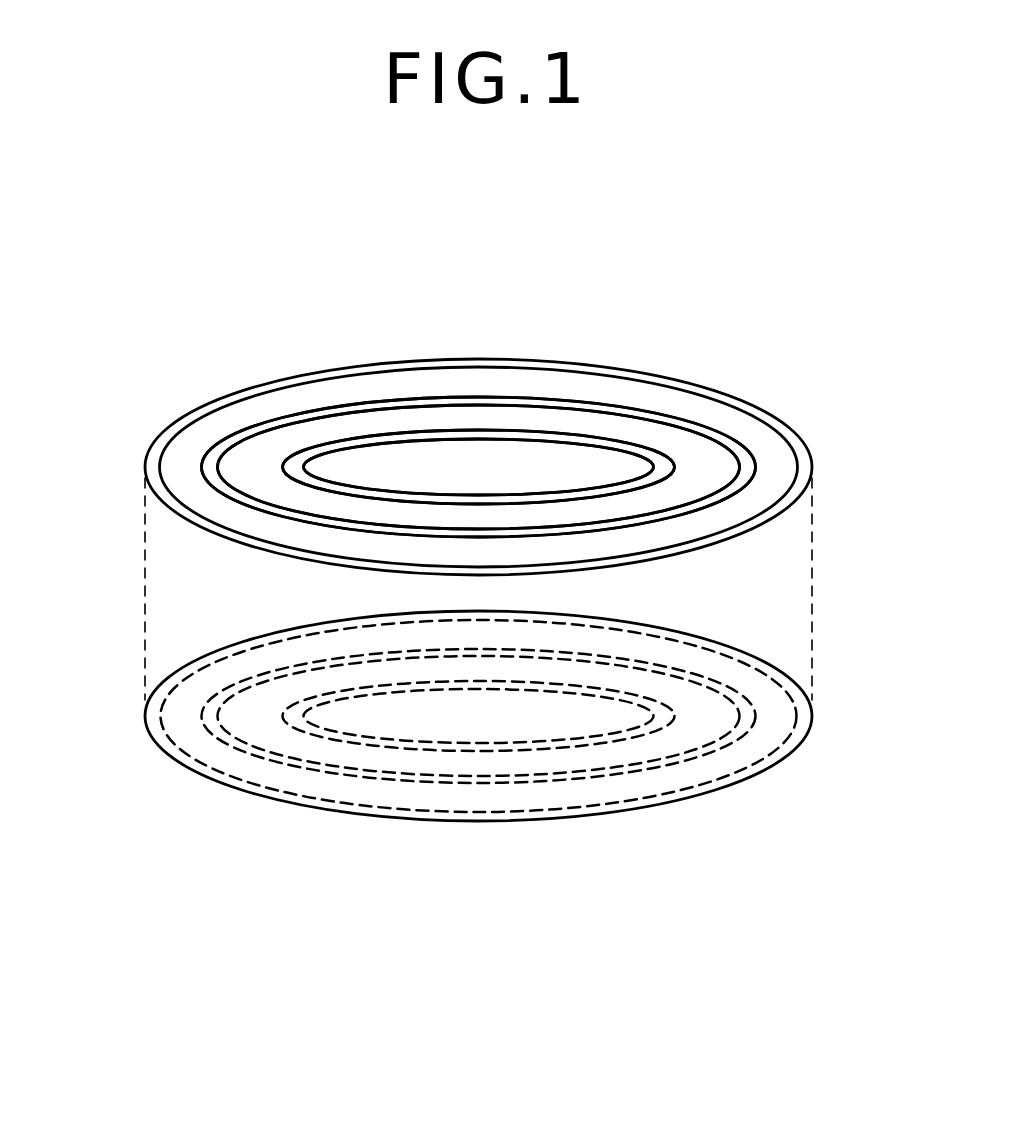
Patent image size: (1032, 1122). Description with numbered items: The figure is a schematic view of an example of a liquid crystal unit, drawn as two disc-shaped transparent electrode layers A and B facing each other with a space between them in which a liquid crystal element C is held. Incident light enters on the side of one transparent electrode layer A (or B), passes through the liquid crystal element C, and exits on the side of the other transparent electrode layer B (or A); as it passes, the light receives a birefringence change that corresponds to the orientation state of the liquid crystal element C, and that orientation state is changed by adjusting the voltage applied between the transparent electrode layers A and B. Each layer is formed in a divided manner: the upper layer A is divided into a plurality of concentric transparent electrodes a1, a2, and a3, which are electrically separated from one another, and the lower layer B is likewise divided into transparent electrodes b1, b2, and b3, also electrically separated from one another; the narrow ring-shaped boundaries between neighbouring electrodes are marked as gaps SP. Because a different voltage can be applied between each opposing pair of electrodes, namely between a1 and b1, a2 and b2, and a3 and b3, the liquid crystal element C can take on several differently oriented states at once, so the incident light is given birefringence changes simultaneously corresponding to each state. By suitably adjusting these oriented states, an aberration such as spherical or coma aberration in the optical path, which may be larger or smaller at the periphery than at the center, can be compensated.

The transparent electrode layer A is at (464, 379).
The transparent electrode layer B is at (497, 789).
The liquid crystal element C is at (806, 577).
The transparent electrode a1 is at (563, 455).
The transparent electrode a2 is at (337, 425).
The transparent electrode a3 is at (487, 382).
The transparent electrode b1 is at (563, 730).
The transparent electrode b2 is at (358, 760).
The transparent electrode b3 is at (478, 805).
The gap SP (groove) SP is at (215, 448).